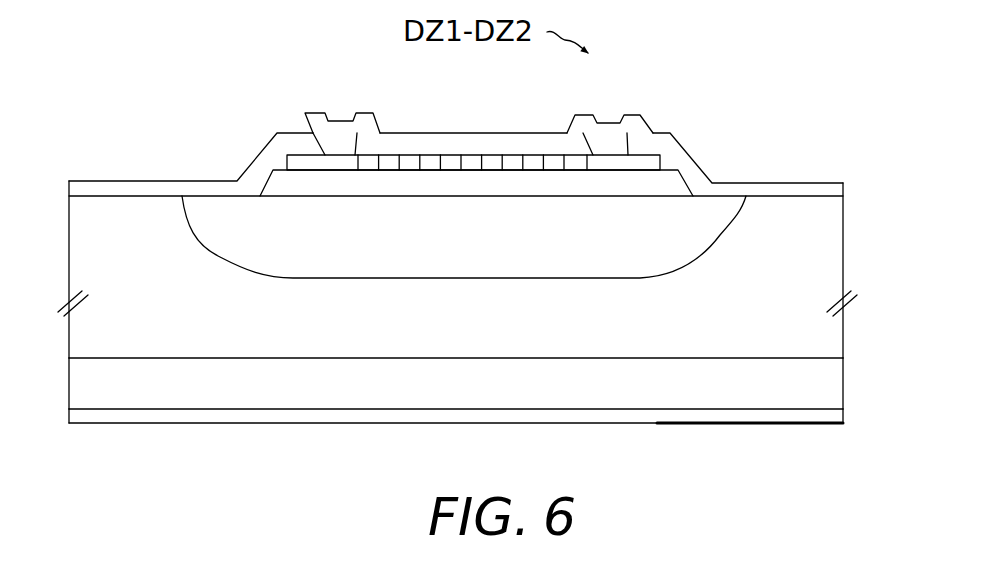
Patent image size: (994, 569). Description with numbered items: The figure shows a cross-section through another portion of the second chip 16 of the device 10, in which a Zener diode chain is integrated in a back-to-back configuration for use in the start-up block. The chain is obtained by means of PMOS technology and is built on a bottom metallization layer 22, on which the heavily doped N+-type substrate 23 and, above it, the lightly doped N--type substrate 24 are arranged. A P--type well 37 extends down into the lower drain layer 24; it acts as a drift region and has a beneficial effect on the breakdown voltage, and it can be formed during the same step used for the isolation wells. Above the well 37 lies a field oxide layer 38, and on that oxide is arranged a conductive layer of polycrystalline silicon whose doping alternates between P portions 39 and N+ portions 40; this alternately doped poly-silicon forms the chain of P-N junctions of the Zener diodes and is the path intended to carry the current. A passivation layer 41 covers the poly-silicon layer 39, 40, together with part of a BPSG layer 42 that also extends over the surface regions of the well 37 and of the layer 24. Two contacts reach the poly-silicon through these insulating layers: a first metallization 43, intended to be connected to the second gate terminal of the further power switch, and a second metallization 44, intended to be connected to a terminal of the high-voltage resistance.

The semiconductor device 10 is at (812, 175).
The second chip 16 is at (845, 213).
The metallization layer 22 is at (220, 413).
The N+-type substrate 23 is at (432, 398).
The N--type substrate 24 is at (207, 352).
The P--type well 37 is at (364, 266).
The field oxide layer 38 is at (476, 184).
The P-doped poly-silicon layer portion 39 is at (429, 161).
The N+-doped poly-silicon layer portion 40 is at (640, 161).
The passivation layer 41 is at (393, 148).
The BPSG layer 42 is at (135, 192).
The first metallization 43 is at (335, 141).
The second metallization 44 is at (600, 133).